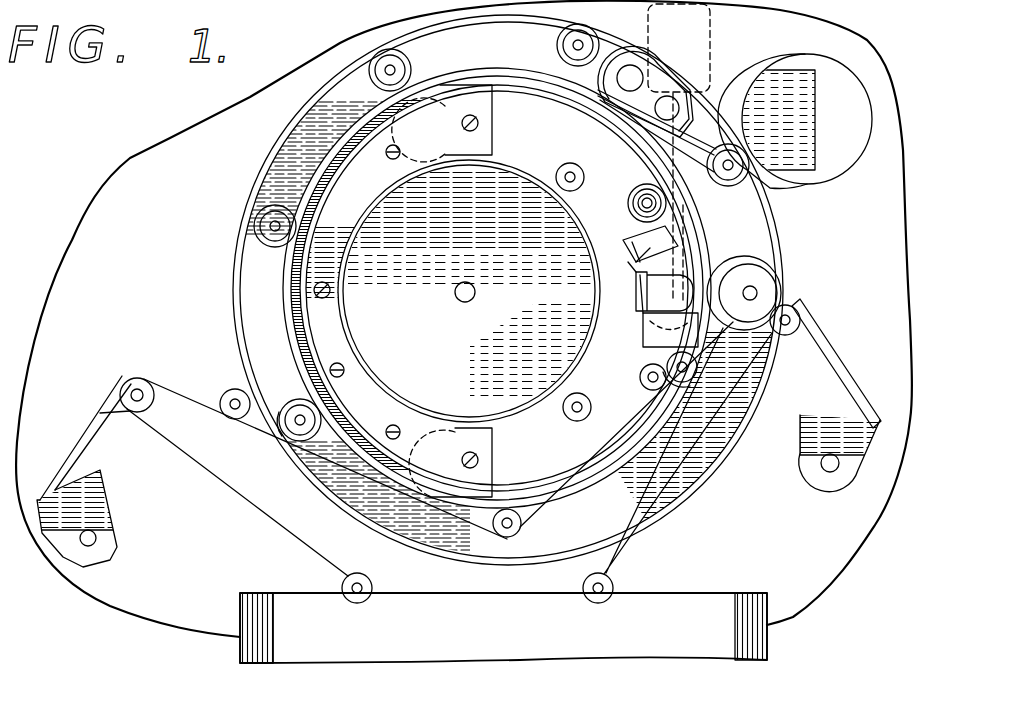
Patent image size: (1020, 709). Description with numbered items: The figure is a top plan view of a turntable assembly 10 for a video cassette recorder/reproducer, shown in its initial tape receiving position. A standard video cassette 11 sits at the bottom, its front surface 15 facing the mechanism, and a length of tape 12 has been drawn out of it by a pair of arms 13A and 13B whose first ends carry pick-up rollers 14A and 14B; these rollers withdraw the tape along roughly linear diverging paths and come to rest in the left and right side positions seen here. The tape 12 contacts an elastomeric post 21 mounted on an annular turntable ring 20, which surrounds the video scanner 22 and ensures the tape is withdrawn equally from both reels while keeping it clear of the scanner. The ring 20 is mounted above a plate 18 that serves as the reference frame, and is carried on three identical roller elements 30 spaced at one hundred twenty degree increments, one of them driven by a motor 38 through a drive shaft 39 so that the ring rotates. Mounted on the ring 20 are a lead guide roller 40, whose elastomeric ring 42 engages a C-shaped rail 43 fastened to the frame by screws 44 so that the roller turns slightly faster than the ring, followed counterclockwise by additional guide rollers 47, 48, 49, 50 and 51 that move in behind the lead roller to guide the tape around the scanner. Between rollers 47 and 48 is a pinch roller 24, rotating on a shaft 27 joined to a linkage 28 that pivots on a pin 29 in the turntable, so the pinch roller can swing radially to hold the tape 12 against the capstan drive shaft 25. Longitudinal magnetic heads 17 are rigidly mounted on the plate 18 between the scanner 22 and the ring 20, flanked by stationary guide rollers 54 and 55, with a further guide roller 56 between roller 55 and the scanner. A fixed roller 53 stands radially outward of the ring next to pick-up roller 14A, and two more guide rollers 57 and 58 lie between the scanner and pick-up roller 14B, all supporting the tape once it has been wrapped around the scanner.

The turntable assembly 10 is at (161, 150).
The video cassette 11 is at (367, 643).
The tape 12 is at (235, 492).
The arm 13A is at (100, 413).
The arm 13B is at (837, 353).
The pick-up roller 14A is at (133, 387).
The pick-up roller 14B is at (795, 312).
The front surface 15 is at (277, 592).
The longitudinal magnetic heads 17 is at (654, 312).
The plate 18 is at (880, 240).
The turntable ring 20 is at (307, 135).
The elastomeric post 21 is at (516, 530).
The video scanner 22 is at (586, 237).
The pinch roller 24 is at (597, 106).
The capstan drive shaft 25 is at (780, 73).
The shaft 27 is at (632, 75).
The linkage 28 is at (632, 114).
The pin 29 is at (672, 100).
The roller elements 30 is at (438, 107).
The motor 38 is at (648, 15).
The drive shaft 39 is at (672, 155).
The lead guide roller 40 is at (757, 275).
The elastomeric ring 42 is at (725, 332).
The C-shaped rail 43 is at (330, 255).
The screws 44 is at (480, 122).
The guide roller 47 is at (740, 160).
The guide roller 48 is at (557, 43).
The guide roller 49 is at (409, 53).
The guide roller 50 is at (255, 215).
The guide roller 51 is at (292, 400).
The fixed roller 53 is at (227, 392).
The guide roller 54 is at (667, 355).
The guide roller 55 is at (628, 205).
The guide roller 56 is at (560, 170).
The guide roller 57 is at (588, 415).
The guide roller 58 is at (651, 385).